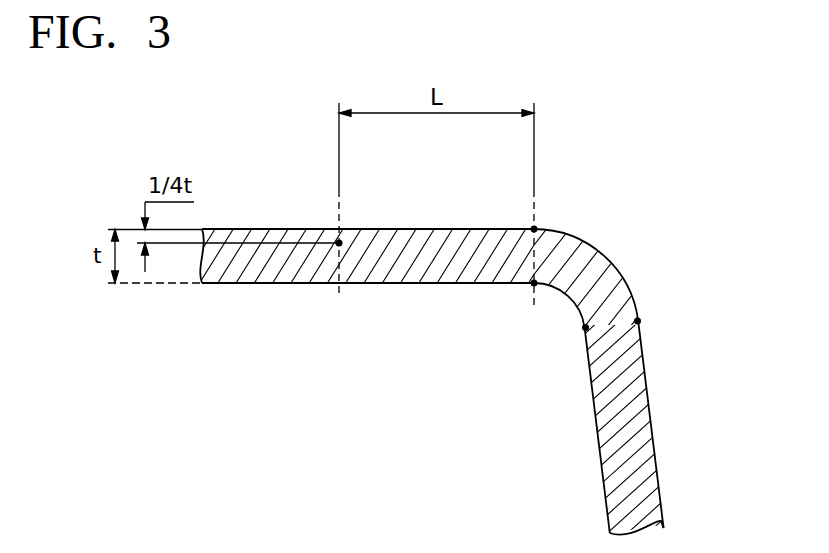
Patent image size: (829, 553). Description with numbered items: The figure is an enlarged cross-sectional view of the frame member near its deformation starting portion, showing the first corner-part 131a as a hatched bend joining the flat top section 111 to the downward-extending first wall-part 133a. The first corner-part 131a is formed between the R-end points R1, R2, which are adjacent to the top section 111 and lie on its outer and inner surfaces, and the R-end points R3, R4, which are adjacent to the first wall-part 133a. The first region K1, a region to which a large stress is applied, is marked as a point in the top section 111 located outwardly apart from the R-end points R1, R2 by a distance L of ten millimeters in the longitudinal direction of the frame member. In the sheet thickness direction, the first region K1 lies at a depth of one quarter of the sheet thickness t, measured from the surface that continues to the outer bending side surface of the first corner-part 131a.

The top section 111 is at (255, 229).
The first region K1 is at (339, 243).
The R-end point R1 is at (534, 229).
The R-end point R2 is at (534, 283).
The R-end point R3 is at (638, 321).
The R-end point R4 is at (586, 328).
The first corner-part 131a is at (583, 262).
The first wall-part 133a is at (632, 406).